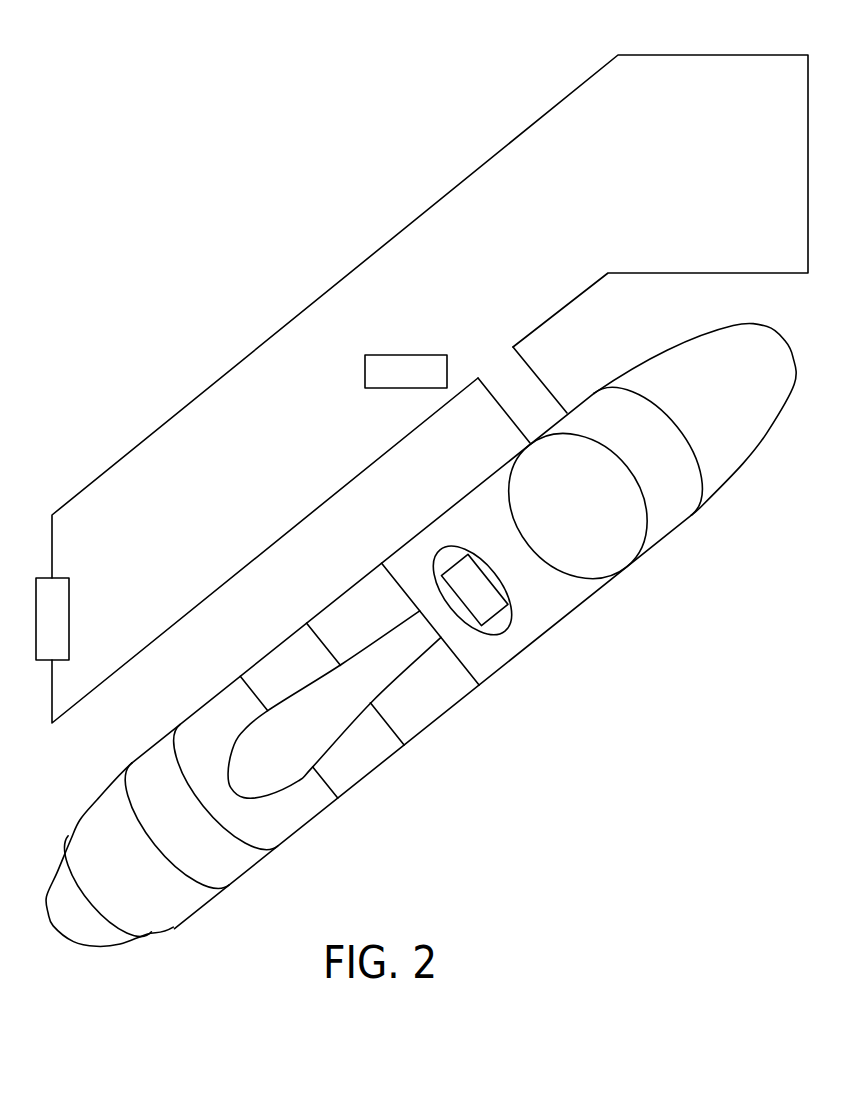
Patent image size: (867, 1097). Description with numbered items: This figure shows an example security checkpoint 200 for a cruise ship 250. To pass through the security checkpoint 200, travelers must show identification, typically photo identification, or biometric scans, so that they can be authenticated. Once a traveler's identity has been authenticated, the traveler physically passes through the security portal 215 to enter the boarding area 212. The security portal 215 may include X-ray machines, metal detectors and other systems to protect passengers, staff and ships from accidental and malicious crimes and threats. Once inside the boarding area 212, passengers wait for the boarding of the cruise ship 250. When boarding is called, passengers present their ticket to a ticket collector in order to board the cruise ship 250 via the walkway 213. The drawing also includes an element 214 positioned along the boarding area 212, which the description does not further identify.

The security checkpoint 200 is at (217, 112).
The boarding area 212 is at (180, 409).
The walkway 213 is at (533, 370).
The sensor module 214 is at (407, 355).
The security portal 215 is at (69, 607).
The cruise ship 250 is at (562, 622).